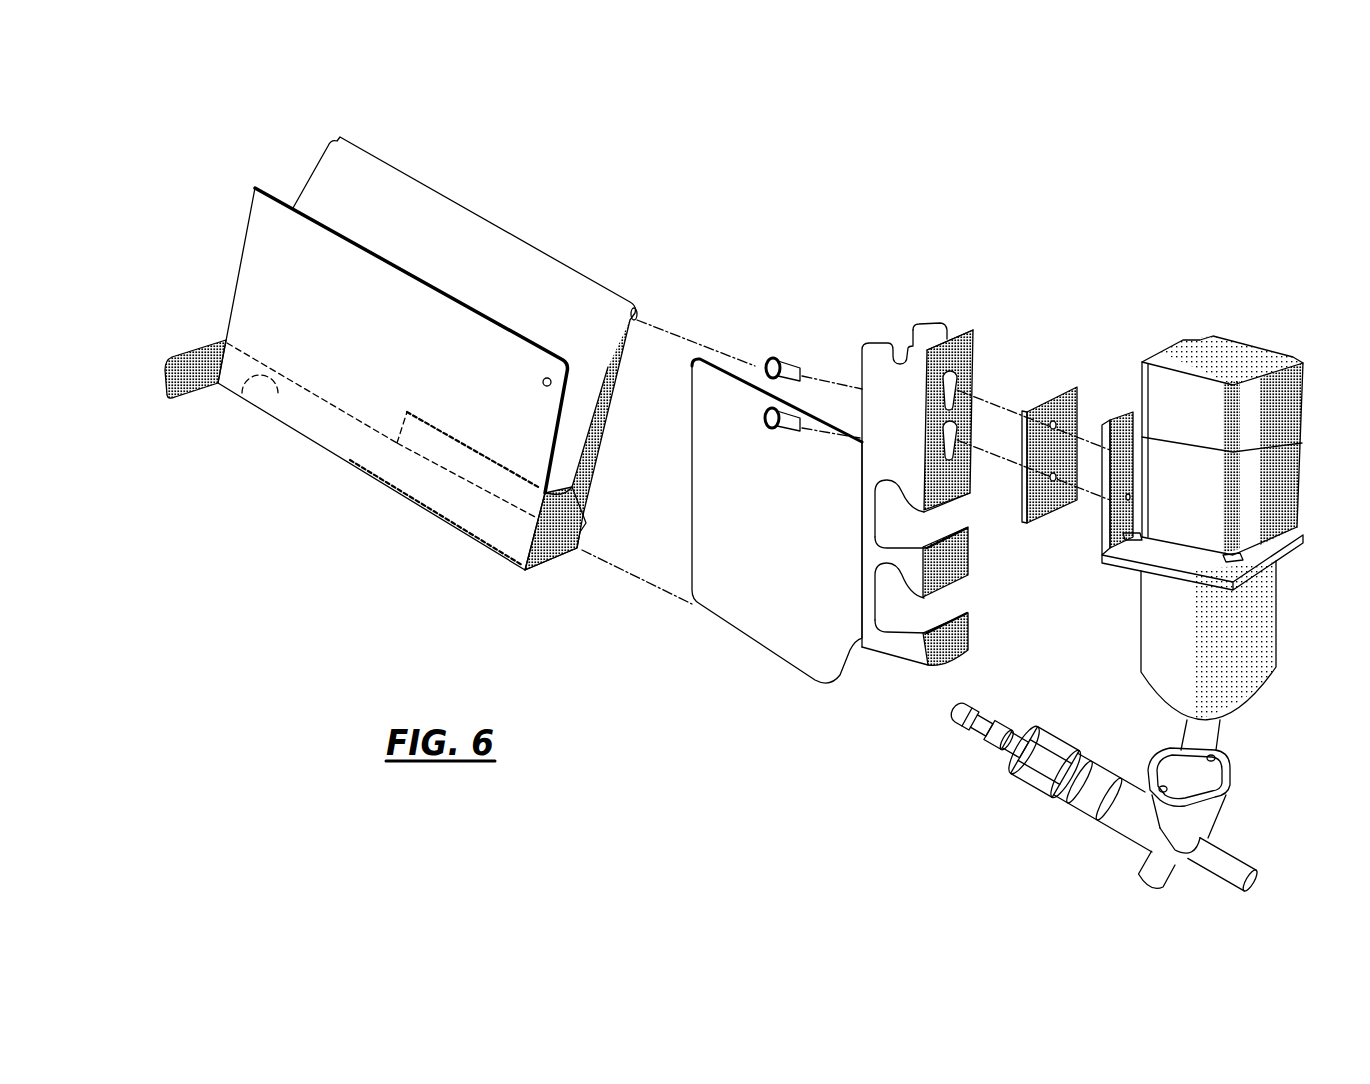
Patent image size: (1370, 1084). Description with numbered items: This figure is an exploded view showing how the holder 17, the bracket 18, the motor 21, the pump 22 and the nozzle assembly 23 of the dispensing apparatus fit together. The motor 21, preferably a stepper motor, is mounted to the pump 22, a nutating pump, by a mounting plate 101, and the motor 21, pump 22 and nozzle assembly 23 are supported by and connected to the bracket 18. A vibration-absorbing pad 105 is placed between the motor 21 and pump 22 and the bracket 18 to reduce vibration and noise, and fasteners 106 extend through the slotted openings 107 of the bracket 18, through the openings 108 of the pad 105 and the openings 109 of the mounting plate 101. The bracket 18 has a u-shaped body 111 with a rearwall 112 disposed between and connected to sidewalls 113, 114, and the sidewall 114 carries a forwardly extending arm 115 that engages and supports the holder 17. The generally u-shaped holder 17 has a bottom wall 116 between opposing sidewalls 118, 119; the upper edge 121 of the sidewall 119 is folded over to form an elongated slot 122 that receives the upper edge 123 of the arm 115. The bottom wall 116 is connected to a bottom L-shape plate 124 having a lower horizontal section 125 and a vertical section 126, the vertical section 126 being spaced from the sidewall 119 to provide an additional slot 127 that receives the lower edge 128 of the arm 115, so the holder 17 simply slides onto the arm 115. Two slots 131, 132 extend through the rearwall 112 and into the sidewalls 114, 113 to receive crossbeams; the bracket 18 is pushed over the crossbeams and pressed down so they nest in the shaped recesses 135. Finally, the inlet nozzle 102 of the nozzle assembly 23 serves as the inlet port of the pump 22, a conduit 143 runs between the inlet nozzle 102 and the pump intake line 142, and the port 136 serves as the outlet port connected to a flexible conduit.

The holder 17 is at (503, 201).
The sidewall 118 is at (268, 263).
The sidewall 119 is at (322, 182).
The upper edge 121 is at (383, 161).
The elongated slot 122 is at (638, 313).
The bottom wall 116 is at (243, 398).
The bottom L-shape plate 124 is at (368, 450).
The lower horizontal section 125 is at (545, 572).
The vertical section 126 is at (583, 531).
The additional slot 127 is at (578, 548).
The forwardly extending arm 115 is at (707, 406).
The upper edge 123 is at (740, 372).
The fasteners 106 is at (783, 410).
The lower edge 128 is at (725, 640).
The bracket 18 is at (898, 325).
The sidewall 113 is at (877, 363).
The sidewall 114 is at (937, 320).
The u-shaped body 111 is at (965, 323).
The slotted openings 107 is at (955, 433).
The shaped recesses 135 is at (876, 583).
The slot 131 is at (968, 522).
The slot 132 is at (962, 596).
The rearwall 112 is at (956, 513).
The vibration-absorbing pad 105 is at (1050, 408).
The openings 108 is at (1053, 478).
The mounting plate 101 is at (1098, 544).
The openings 109 is at (1110, 455).
The motor 21 is at (1228, 350).
The pump 22 is at (1270, 633).
The nozzle assembly 23 is at (1091, 820).
The inlet nozzle 102 is at (950, 708).
The conduit 143 is at (1123, 807).
The pump intake line 142 is at (1213, 818).
The port 136 is at (1218, 862).